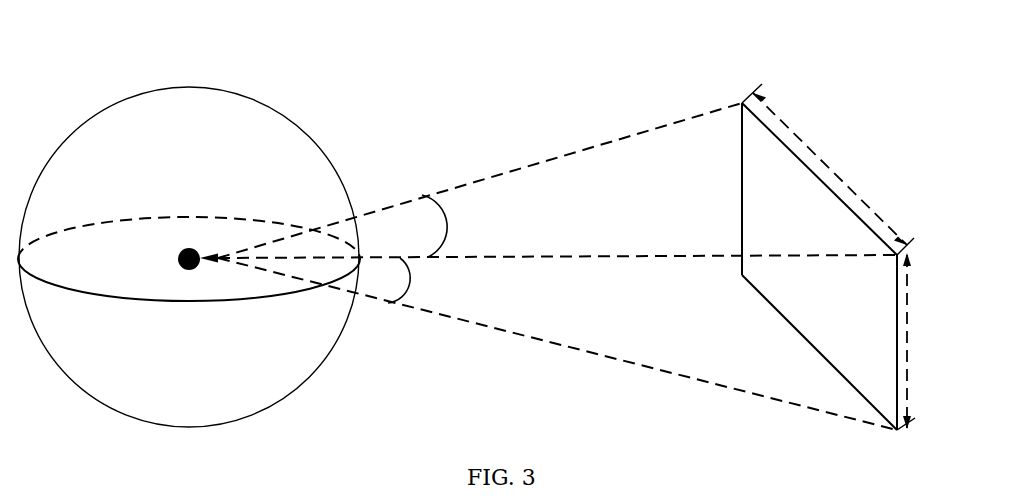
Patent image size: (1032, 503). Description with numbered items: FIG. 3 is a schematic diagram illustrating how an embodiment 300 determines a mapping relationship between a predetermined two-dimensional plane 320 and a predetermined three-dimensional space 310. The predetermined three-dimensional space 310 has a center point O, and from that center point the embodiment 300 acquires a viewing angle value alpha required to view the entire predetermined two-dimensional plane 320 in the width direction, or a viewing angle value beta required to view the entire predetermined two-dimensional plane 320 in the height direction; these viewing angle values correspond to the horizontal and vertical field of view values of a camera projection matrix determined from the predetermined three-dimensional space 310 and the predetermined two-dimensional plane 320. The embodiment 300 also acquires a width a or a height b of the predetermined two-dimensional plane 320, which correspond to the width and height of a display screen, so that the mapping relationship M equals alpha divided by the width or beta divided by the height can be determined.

The embodiment 300 is at (103, 23).
The predetermined three-dimensional space 310 is at (221, 88).
The predetermined two-dimensional plane 320 is at (843, 196).